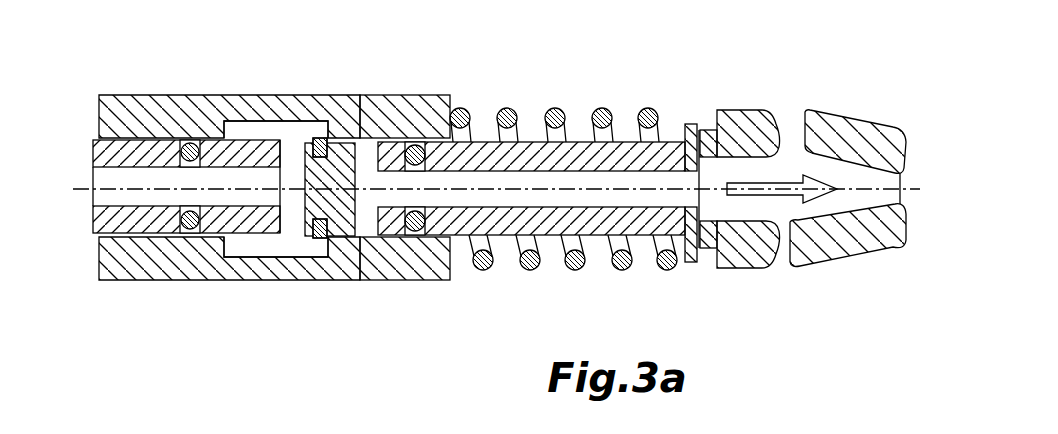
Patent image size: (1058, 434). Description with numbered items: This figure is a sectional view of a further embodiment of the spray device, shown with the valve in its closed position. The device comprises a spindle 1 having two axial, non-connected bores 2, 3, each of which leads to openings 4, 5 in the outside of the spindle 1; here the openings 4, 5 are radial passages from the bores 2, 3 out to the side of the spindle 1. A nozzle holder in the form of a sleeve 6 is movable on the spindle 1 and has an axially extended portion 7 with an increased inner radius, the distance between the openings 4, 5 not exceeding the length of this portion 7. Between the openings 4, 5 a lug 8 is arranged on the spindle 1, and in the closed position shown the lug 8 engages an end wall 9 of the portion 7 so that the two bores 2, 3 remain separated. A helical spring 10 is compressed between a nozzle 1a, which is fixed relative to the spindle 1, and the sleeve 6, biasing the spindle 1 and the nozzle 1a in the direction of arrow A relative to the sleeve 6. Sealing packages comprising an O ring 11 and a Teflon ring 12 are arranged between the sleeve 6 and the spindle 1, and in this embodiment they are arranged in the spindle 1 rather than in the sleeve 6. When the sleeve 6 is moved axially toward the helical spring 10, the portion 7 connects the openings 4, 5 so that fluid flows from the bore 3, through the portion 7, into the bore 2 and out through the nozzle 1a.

The spindle 1 is at (676, 123).
The nozzle 1a is at (753, 110).
The bore 2 is at (683, 183).
The bore 3 is at (110, 182).
The opening 4 is at (291, 152).
The opening 5 is at (370, 156).
The sleeve 6 is at (180, 100).
The portion with an increased inner radius 7 is at (246, 128).
The lug 8 is at (313, 141).
The end wall 9 is at (321, 138).
The helical spring 10 is at (607, 112).
The O ring 11 is at (181, 157).
The Teflon ring 12 is at (186, 145).
The arrow A is at (773, 193).